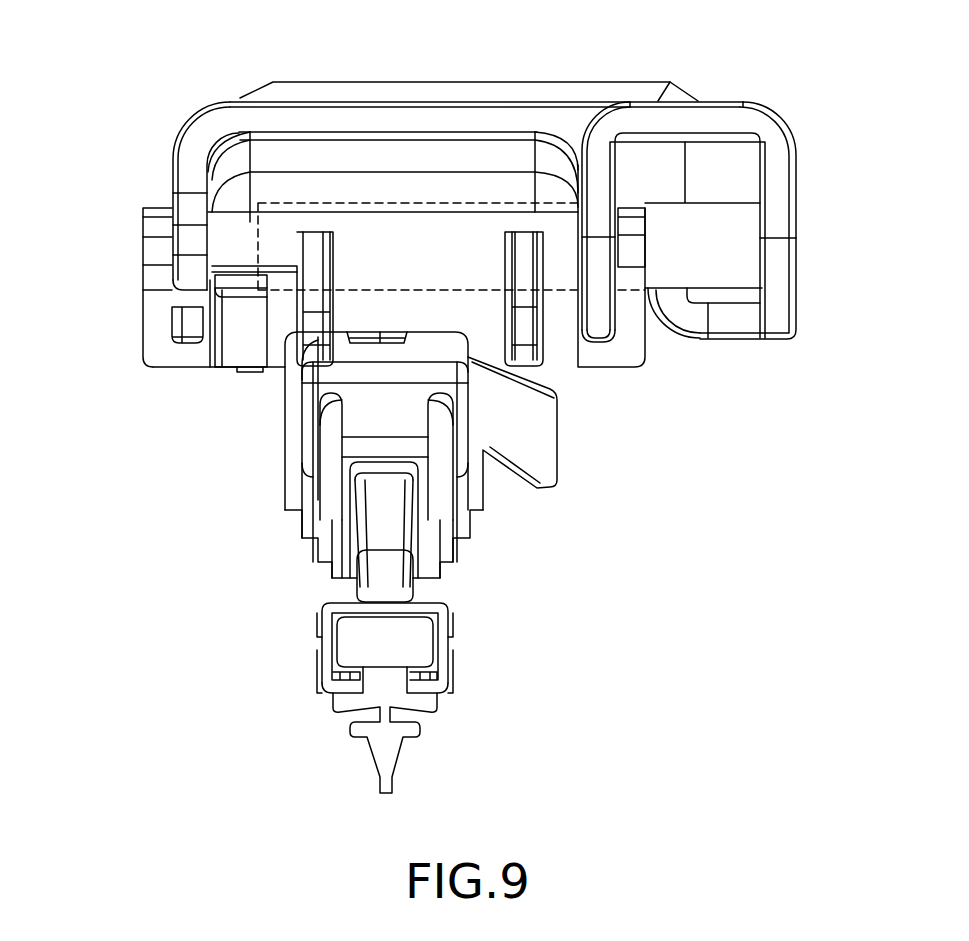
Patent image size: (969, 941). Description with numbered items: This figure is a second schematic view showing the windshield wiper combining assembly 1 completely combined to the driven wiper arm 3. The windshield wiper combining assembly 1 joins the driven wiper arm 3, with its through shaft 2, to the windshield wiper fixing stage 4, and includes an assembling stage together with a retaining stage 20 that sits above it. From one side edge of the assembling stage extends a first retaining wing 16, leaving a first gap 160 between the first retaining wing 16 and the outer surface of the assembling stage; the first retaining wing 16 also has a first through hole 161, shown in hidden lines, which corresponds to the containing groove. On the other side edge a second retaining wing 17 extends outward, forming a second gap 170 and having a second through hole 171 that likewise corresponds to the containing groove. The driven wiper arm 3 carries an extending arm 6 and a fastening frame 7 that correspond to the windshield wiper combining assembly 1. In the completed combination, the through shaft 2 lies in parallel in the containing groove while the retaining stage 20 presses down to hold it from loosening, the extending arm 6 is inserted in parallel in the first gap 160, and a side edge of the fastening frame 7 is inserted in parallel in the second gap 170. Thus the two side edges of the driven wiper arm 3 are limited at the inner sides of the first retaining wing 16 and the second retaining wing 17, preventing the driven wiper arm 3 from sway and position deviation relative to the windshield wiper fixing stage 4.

The windshield wiper combining assembly 1 is at (476, 120).
The through shaft 2 is at (412, 207).
The driven wiper arm 3 is at (720, 102).
The windshield wiper fixing stage 4 is at (313, 298).
The extending arm 6 is at (200, 128).
The fastening frame 7 is at (775, 300).
The first retaining wing 16 is at (143, 245).
The second retaining wing 17 is at (645, 227).
The retaining stage 20 is at (338, 133).
The first gap 160 is at (192, 298).
The first through hole 161 is at (173, 290).
The second gap 170 is at (618, 300).
The second through hole 171 is at (628, 288).